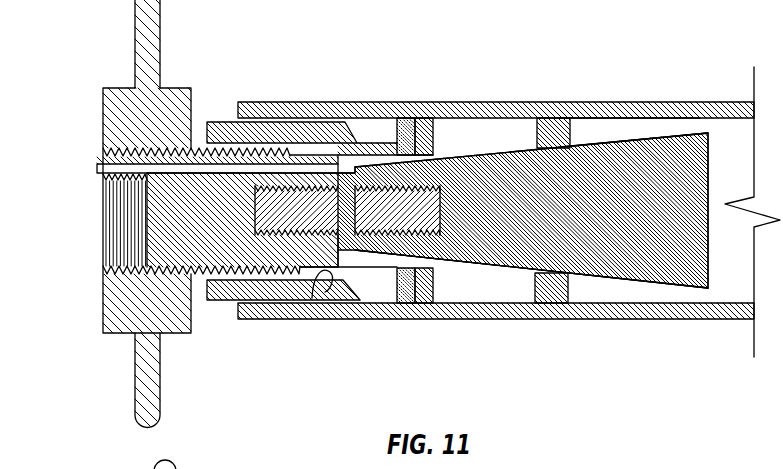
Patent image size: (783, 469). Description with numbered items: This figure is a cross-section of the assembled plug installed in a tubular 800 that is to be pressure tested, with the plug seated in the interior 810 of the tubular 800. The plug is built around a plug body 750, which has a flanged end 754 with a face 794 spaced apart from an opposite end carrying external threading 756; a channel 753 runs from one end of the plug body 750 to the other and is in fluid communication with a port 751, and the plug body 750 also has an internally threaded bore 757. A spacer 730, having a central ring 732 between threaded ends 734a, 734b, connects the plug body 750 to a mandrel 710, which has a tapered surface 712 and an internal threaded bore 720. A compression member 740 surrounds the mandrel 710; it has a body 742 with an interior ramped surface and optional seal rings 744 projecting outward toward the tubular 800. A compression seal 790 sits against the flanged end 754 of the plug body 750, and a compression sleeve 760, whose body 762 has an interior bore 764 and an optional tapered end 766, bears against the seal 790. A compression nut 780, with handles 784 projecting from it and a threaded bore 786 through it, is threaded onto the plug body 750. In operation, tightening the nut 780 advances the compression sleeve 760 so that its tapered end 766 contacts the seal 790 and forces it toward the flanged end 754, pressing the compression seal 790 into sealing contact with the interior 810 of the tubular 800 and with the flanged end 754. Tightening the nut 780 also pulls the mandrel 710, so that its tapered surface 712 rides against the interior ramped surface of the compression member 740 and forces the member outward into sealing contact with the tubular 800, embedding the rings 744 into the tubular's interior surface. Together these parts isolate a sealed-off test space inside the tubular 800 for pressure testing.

The mandrel 710 is at (678, 220).
The tapered surface 712 is at (648, 282).
The internal threaded bore 720 is at (432, 265).
The spacer 730 is at (440, 210).
The central ring 732 is at (353, 168).
The threaded end 734a is at (296, 210).
The threaded end 734b is at (397, 210).
The compression member 740 is at (582, 130).
The body 742 is at (552, 148).
The seal rings 744 is at (563, 300).
The plug body 750 is at (184, 192).
The port 751 is at (100, 166).
The channel 753 is at (103, 178).
The flanged end 754 is at (425, 300).
The external threading 756 is at (247, 152).
The internally threaded bore 757 is at (320, 240).
The compression sleeve 760 is at (298, 122).
The body 762 is at (215, 296).
The interior bore 764 is at (322, 282).
The tapered end 766 is at (348, 160).
The compression nut 780 is at (103, 135).
The handles 784 is at (140, 50).
The threaded bore 786 is at (115, 258).
The compression seal 790 is at (425, 136).
The face 794 is at (412, 298).
The tubular 800 is at (697, 102).
The interior 810 is at (608, 120).